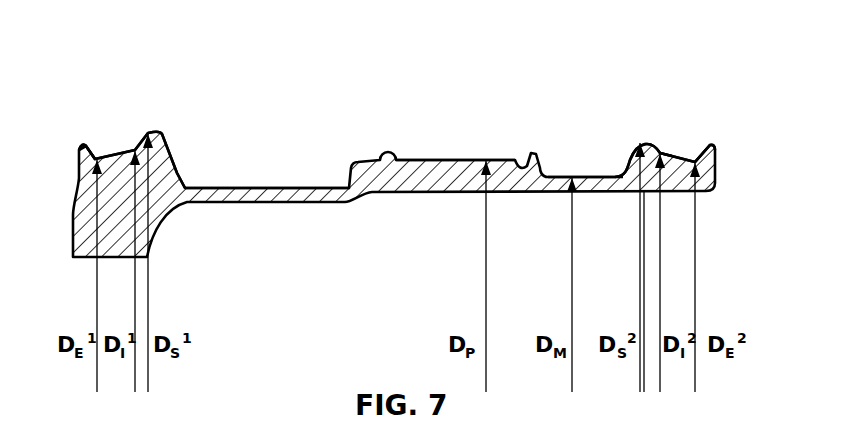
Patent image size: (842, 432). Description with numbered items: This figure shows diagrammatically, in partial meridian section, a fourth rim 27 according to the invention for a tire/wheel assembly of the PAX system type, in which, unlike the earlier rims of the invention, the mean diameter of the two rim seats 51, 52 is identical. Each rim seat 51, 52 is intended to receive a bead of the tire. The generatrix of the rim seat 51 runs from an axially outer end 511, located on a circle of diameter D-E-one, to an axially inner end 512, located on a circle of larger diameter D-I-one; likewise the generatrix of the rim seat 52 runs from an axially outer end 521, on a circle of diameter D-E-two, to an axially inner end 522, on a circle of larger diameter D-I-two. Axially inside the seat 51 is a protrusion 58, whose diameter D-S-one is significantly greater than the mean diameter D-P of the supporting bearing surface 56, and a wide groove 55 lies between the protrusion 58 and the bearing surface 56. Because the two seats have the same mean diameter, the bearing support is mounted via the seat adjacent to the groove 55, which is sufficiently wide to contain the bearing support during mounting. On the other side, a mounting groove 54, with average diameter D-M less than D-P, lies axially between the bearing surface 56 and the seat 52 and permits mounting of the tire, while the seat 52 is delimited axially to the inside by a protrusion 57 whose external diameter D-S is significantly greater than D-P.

The rim 27 is at (392, 176).
The rim seat 51 is at (110, 126).
The axially outer end 511 is at (101, 155).
The axially inner end 512 is at (131, 145).
The protrusion 58 is at (153, 131).
The groove 55 is at (268, 188).
The supporting bearing surface 56 is at (502, 160).
The mounting groove 54 is at (578, 160).
The protrusion 57 is at (647, 142).
The rim seat 52 is at (685, 124).
The axially inner end 522 is at (663, 151).
The axially outer end 521 is at (696, 159).